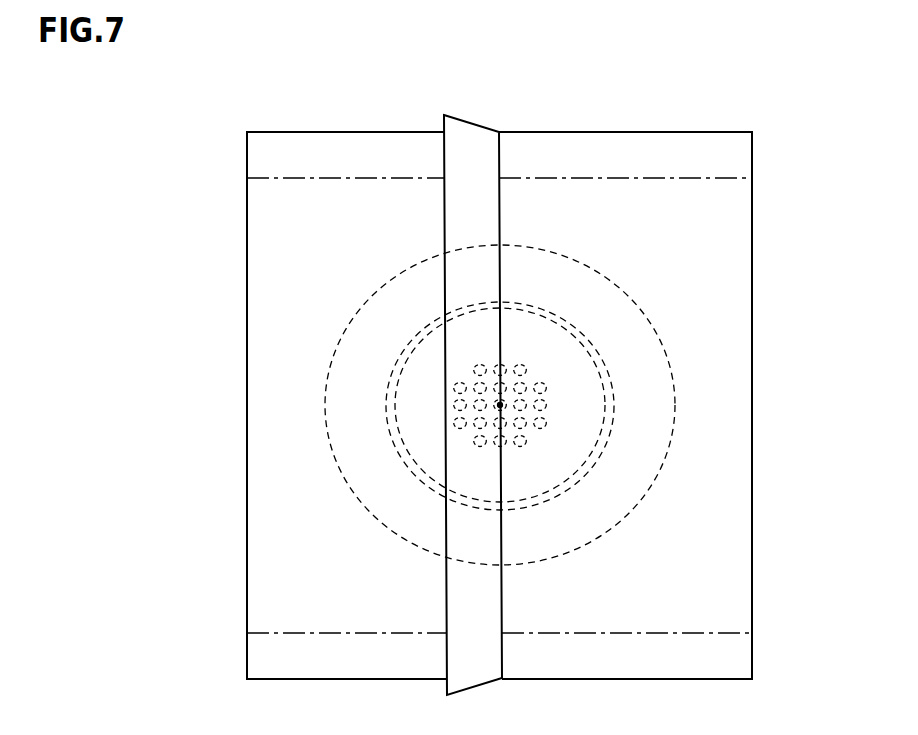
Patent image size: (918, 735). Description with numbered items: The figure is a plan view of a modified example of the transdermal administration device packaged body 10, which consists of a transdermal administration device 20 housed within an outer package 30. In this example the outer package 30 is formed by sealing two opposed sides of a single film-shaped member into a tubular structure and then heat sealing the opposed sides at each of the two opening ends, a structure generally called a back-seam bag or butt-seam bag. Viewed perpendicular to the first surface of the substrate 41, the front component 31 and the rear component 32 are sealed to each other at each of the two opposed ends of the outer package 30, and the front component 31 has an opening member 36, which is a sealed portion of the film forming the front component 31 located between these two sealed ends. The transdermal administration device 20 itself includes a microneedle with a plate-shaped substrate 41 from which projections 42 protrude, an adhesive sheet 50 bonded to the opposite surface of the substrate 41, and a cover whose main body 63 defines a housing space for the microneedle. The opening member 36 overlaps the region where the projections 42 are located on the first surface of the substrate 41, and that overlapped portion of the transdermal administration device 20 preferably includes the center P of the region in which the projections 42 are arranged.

The transdermal administration device packaged body 10 is at (219, 145).
The transdermal administration device 20 is at (581, 560).
The outer package 30 is at (752, 292).
The front component 31 is at (723, 245).
The rear component 32 is at (737, 193).
The opening member 36 is at (477, 133).
The substrate 41 is at (562, 327).
The projection 42 is at (541, 380).
The adhesive sheet 50 is at (397, 535).
The main body 63 is at (538, 509).
The center P is at (502, 406).